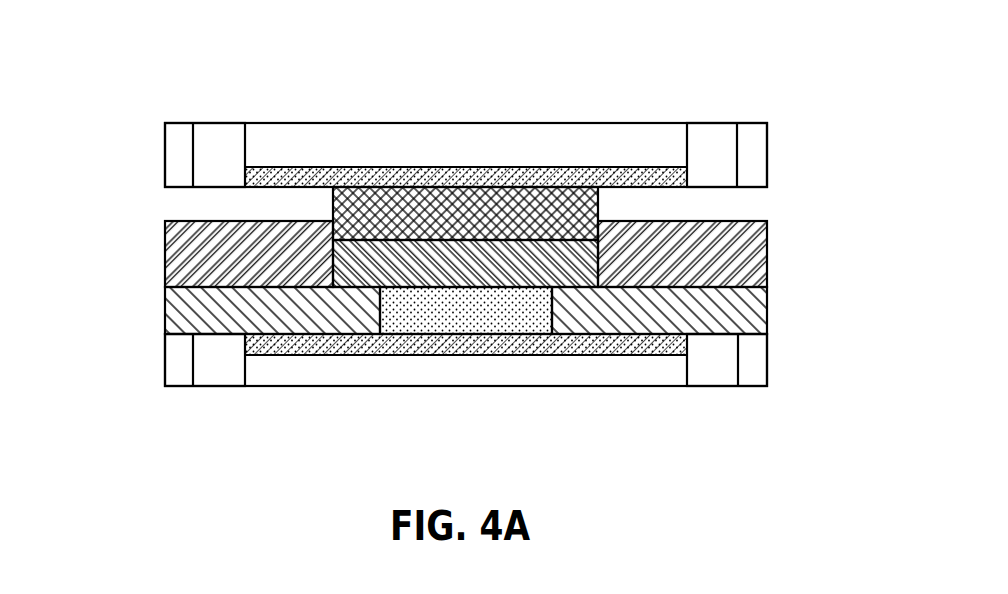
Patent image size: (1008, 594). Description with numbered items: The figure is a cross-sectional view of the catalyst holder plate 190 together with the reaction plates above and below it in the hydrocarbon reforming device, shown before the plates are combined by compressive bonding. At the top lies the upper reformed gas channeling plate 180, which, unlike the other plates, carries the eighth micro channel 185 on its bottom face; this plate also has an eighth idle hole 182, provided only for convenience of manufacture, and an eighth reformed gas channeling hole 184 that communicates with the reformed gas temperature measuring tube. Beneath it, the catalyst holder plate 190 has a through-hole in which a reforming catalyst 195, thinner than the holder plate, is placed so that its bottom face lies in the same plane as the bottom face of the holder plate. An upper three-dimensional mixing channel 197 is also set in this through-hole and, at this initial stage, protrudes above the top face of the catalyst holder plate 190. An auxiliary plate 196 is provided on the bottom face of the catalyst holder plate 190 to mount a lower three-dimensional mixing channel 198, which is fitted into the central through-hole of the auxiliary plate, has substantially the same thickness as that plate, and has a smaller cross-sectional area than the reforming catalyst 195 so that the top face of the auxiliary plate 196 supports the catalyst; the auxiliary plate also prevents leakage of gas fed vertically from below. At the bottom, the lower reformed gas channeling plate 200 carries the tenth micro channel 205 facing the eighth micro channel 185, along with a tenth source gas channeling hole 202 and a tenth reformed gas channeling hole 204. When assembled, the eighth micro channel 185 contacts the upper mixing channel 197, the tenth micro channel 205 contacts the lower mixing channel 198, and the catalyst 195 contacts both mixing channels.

The upper reformed gas channeling plate 180 is at (757, 159).
The eighth idle hole 182 is at (220, 133).
The eighth reformed gas channeling hole 184 is at (712, 135).
The eighth micro channel 185 is at (417, 172).
The catalyst holder plate 190 is at (182, 240).
The reforming catalyst 195 is at (583, 263).
The auxiliary plate 196 is at (182, 310).
The upper three-dimensional mixing channel 197 is at (585, 204).
The lower three-dimensional mixing channel 198 is at (448, 322).
The lower reformed gas channeling plate 200 is at (308, 373).
The tenth source gas channeling hole 202 is at (212, 378).
The tenth reformed gas channeling hole 204 is at (718, 378).
The tenth micro channel 205 is at (368, 345).